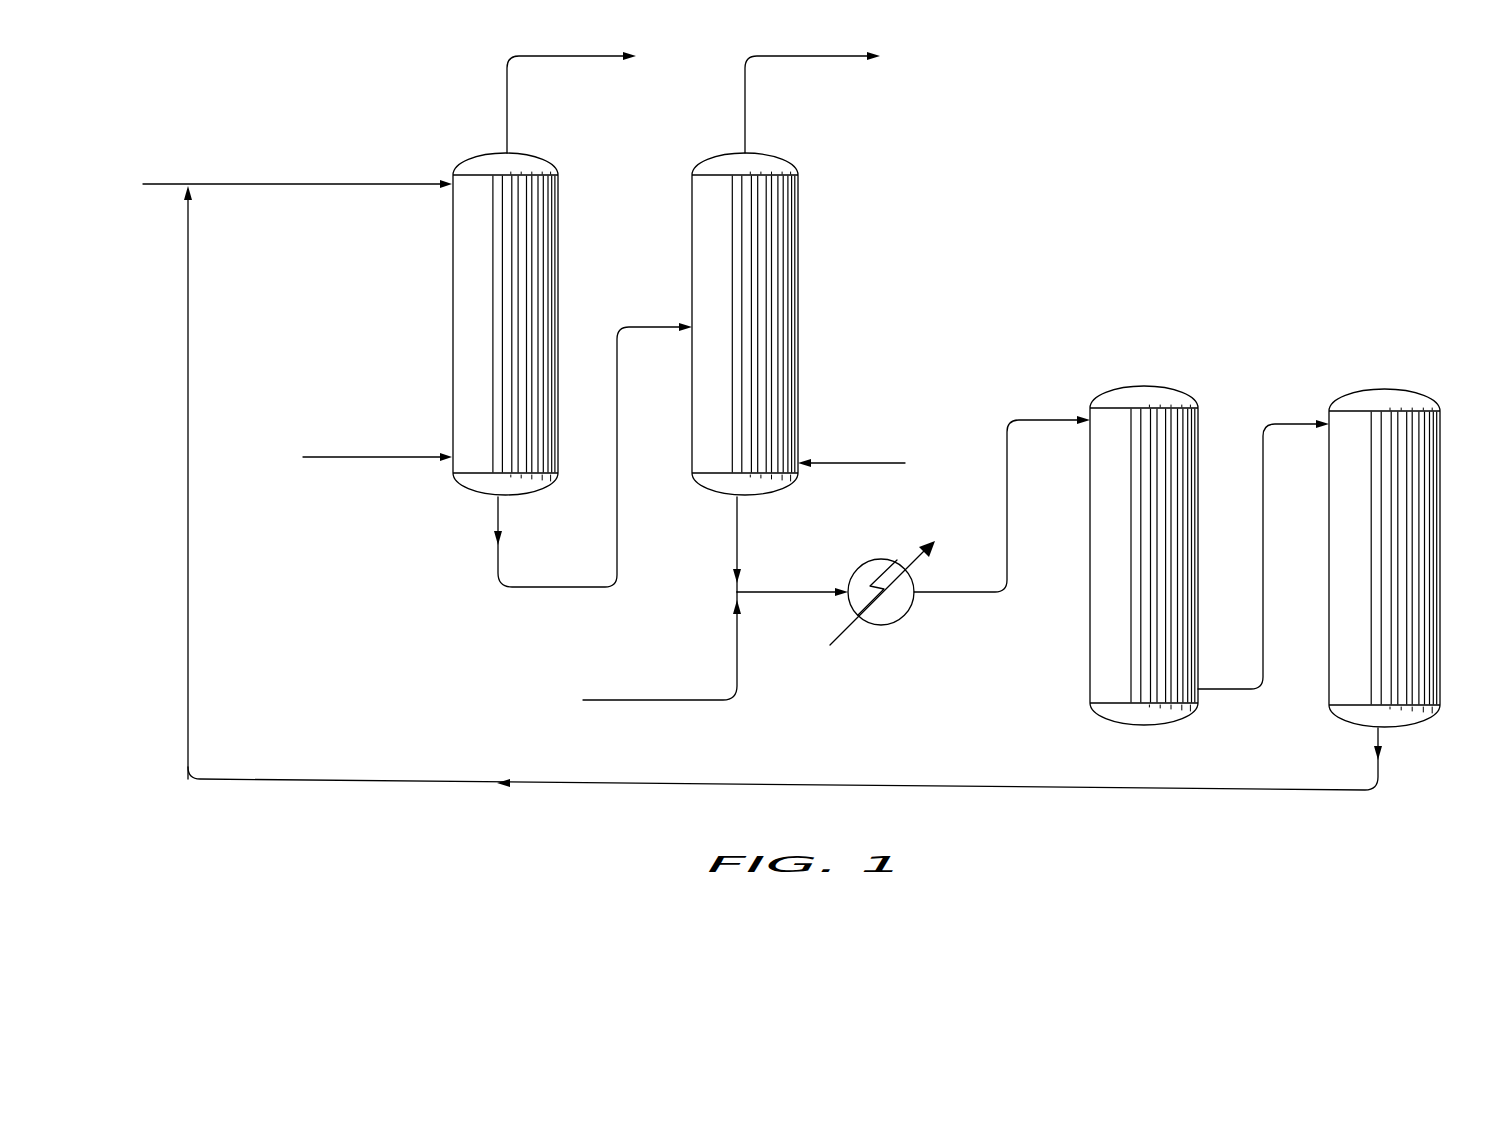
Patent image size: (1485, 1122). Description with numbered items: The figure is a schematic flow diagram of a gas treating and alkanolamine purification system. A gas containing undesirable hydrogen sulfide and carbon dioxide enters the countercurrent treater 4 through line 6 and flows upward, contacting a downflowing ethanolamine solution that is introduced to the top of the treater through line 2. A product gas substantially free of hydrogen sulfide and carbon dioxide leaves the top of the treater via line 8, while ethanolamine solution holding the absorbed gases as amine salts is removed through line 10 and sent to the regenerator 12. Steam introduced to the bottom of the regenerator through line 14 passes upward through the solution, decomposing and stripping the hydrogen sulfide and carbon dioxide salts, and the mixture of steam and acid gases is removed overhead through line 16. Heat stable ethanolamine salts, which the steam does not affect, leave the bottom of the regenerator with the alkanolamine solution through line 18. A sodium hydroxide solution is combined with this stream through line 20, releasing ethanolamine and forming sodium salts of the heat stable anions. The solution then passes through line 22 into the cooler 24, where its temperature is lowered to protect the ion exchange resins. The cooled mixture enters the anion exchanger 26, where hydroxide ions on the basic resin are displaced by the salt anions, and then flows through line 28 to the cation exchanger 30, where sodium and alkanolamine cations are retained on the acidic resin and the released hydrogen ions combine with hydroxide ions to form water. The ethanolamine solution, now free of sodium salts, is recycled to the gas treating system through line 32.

The line 2 is at (222, 183).
The treater 4 is at (495, 282).
The line 6 is at (370, 458).
The line 8 is at (505, 97).
The line 10 is at (500, 588).
The regenerator 12 is at (722, 282).
The line 14 is at (848, 465).
The line 16 is at (743, 97).
The line 18 is at (735, 548).
The line 20 is at (737, 660).
The line 22 is at (797, 592).
The cooler 24 is at (906, 606).
The anion exchanger 26 is at (1127, 528).
The line 28 is at (1263, 540).
The cation exchanger 30 is at (1365, 533).
The line 32 is at (1092, 790).